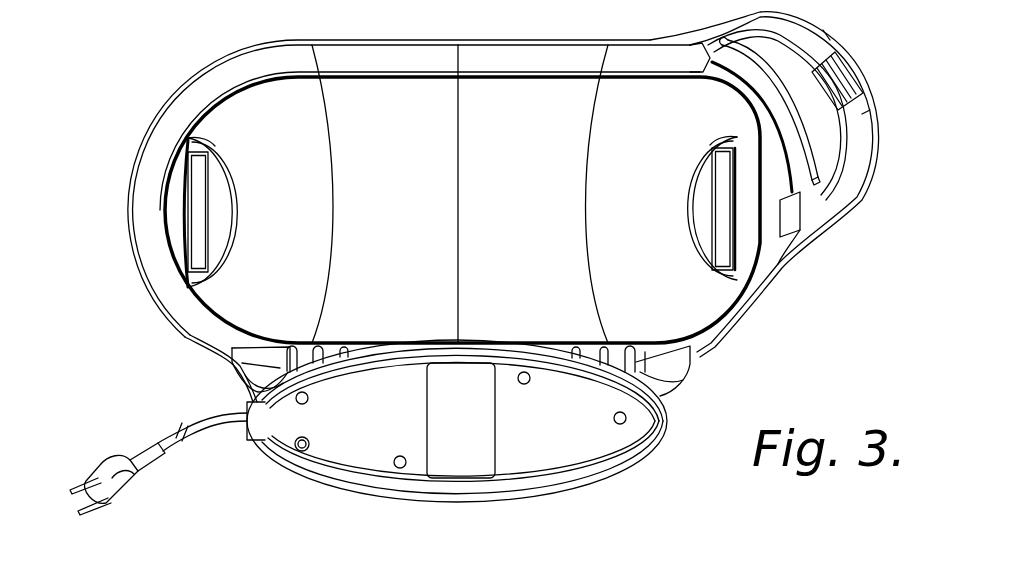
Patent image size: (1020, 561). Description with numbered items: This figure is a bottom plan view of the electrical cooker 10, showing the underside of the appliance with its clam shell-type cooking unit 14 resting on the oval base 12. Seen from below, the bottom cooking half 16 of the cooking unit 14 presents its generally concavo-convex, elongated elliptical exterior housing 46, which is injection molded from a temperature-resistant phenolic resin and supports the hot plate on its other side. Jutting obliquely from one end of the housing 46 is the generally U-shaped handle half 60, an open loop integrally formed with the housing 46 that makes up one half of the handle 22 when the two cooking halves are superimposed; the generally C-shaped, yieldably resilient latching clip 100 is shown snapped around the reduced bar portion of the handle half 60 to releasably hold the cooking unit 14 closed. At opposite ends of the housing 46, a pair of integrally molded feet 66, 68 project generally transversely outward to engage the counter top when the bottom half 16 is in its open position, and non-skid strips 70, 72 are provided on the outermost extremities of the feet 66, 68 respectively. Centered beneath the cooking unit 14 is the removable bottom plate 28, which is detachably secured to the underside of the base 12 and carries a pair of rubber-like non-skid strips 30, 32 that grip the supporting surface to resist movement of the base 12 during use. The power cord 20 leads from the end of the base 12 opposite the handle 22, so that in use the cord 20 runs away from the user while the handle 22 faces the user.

The electrical cooker 10 is at (499, 201).
The base 12 is at (505, 430).
The cooking unit 14 is at (121, 219).
The bottom cooking half 16 is at (138, 148).
The power cord 20 is at (180, 432).
The handle 22 is at (880, 144).
The bottom plate 28 is at (585, 457).
The non-skid strip 30 is at (357, 360).
The non-skid strip 32 is at (350, 478).
The exterior housing 46 is at (377, 92).
The handle half 60 is at (855, 165).
The foot 66 is at (206, 277).
The foot 68 is at (718, 278).
The non-skid strip 70 is at (133, 212).
The non-skid strip 72 is at (722, 206).
The latching clip 100 is at (850, 70).